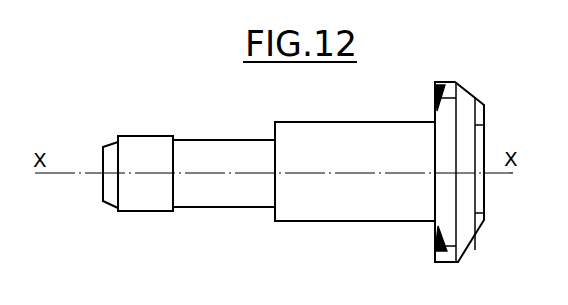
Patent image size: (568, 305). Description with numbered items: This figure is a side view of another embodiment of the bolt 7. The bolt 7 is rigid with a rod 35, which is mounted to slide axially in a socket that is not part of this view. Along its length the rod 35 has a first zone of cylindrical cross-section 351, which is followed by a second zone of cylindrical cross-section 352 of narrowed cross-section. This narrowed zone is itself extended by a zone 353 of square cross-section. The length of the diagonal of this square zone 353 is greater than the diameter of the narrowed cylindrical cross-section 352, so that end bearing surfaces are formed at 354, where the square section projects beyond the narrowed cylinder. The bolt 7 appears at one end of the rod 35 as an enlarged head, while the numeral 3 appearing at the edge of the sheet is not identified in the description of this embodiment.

The bolt 7 is at (450, 128).
The rod 35 is at (320, 118).
The first zone of cylindrical cross-section 351 is at (372, 143).
The second zone of cylindrical cross-section 352 is at (230, 153).
The zone of square cross-section 353 is at (140, 195).
The end bearing surfaces 354 is at (177, 192).
The sheet reference 3 is at (561, 78).